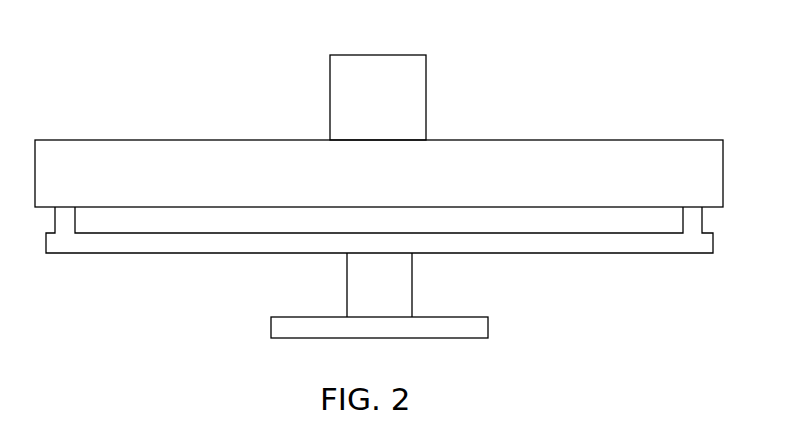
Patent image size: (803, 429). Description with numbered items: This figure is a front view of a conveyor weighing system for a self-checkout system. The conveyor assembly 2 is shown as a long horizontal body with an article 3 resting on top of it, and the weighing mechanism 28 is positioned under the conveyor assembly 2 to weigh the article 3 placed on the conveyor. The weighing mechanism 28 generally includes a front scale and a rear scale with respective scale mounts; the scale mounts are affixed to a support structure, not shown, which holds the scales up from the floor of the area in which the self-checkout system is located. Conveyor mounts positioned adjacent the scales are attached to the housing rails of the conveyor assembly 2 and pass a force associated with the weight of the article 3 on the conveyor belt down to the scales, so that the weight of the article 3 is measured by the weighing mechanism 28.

The conveyor assembly 2 is at (514, 140).
The article 3 is at (426, 68).
The weighing mechanism 28 is at (379, 282).